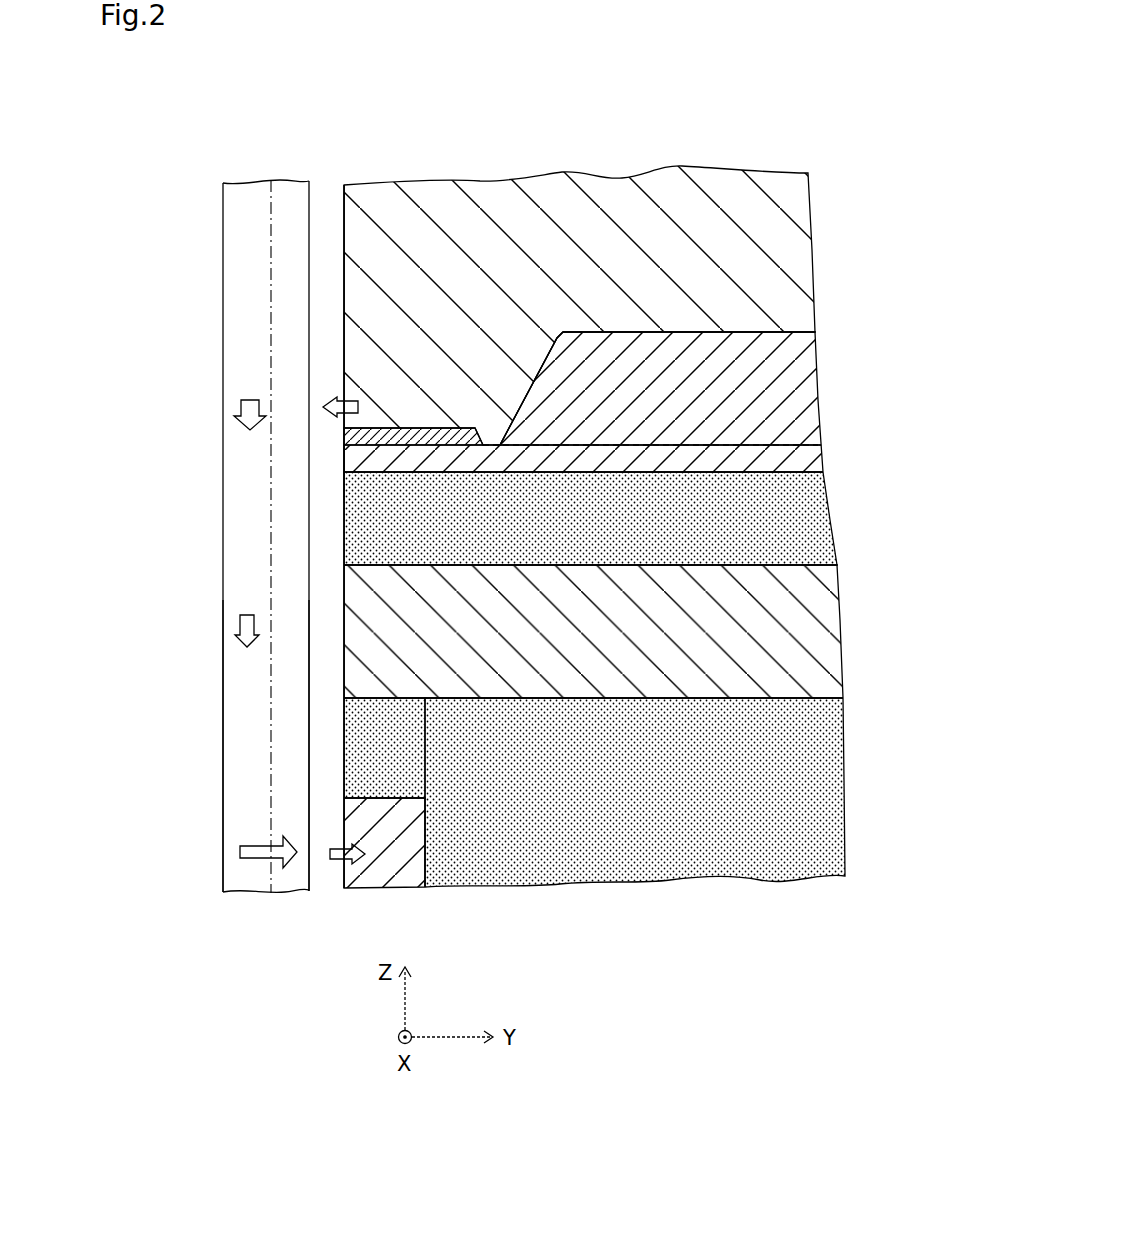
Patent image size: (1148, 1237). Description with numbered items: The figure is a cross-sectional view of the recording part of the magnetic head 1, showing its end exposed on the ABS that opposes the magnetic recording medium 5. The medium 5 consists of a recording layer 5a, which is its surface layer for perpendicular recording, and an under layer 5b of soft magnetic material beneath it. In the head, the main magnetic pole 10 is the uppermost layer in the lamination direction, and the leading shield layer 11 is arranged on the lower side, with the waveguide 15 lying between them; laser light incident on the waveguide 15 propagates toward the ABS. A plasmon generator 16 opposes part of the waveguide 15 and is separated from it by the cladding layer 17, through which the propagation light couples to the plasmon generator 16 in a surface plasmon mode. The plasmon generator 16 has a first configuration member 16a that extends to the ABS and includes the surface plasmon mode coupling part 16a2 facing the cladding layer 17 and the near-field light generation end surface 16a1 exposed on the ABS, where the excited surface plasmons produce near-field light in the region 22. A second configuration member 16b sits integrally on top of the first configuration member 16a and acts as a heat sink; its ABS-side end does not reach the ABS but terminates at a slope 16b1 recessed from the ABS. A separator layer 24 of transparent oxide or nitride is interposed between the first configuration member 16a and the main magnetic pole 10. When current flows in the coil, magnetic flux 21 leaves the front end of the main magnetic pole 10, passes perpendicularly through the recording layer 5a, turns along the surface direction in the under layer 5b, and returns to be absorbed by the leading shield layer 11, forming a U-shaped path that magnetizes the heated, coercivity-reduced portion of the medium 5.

The magnetic head 1 is at (714, 146).
The magnetic recording medium 5 is at (250, 171).
The recording layer 5a is at (298, 893).
The under layer 5b is at (255, 891).
The main magnetic pole 10 is at (378, 202).
The leading shield layer 11 is at (410, 878).
The waveguide 15 is at (805, 630).
The plasmon generator 16 is at (528, 306).
The first configuration member 16a is at (517, 465).
The near-field light generation end surface 16a1 is at (346, 472).
The surface plasmon mode coupling part 16a2 is at (767, 477).
The second configuration member 16b is at (700, 277).
The slope 16b1 is at (548, 356).
The cladding layer 17 is at (803, 543).
The magnetic flux 21 is at (343, 398).
The region where near-field light is generated 22 is at (334, 444).
The separator layer 24 is at (348, 484).
The air bearing surface ABS is at (344, 765).